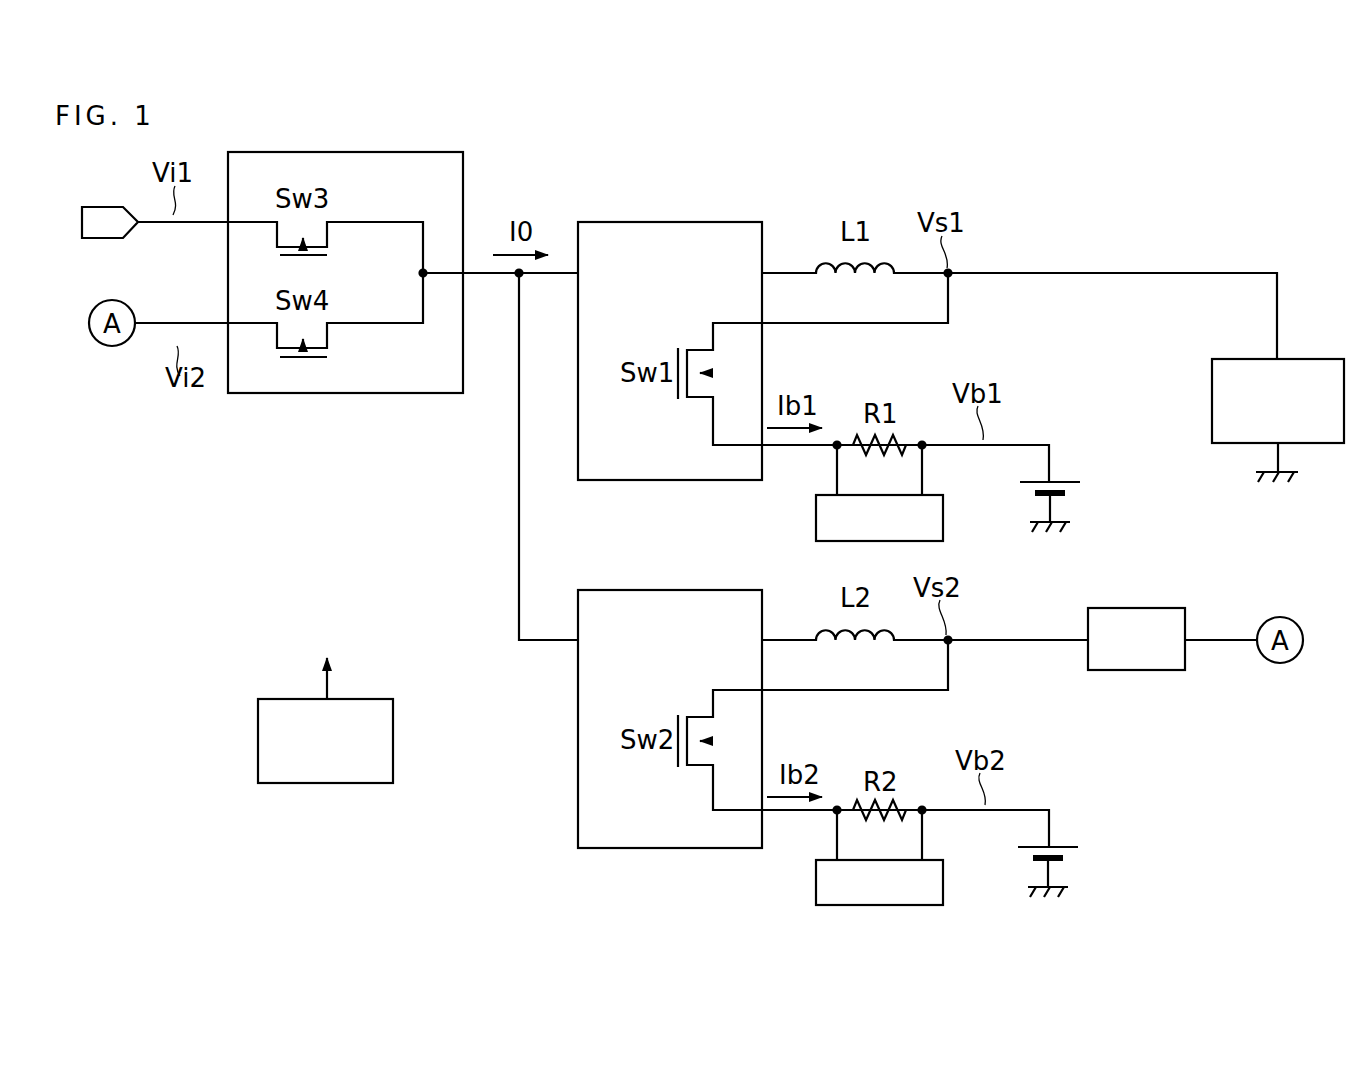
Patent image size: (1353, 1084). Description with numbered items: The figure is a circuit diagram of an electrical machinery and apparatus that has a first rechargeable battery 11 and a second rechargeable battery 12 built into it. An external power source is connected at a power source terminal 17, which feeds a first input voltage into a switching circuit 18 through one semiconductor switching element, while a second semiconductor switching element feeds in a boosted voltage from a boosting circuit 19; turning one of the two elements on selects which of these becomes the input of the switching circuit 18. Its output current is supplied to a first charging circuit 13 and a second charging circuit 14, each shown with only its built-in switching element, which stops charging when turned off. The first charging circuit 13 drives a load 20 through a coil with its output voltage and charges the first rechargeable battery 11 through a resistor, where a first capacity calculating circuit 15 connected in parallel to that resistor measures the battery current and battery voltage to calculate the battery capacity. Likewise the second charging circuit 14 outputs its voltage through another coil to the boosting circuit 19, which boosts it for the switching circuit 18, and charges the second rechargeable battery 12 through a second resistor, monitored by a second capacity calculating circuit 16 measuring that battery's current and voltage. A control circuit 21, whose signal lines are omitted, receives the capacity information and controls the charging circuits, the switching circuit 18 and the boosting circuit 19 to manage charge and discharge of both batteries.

The first rechargeable battery 11 is at (1087, 489).
The second rechargeable battery 12 is at (1084, 852).
The first charging circuit 13 is at (668, 220).
The second charging circuit 14 is at (668, 851).
The first capacity calculating circuit 15 is at (879, 493).
The second capacity calculating circuit 16 is at (879, 857).
The power source terminal 17 is at (100, 206).
The switching circuit 18 is at (345, 395).
The boosting circuit 19 is at (1136, 639).
The load 20 is at (1278, 420).
The control circuit 21 is at (325, 720).